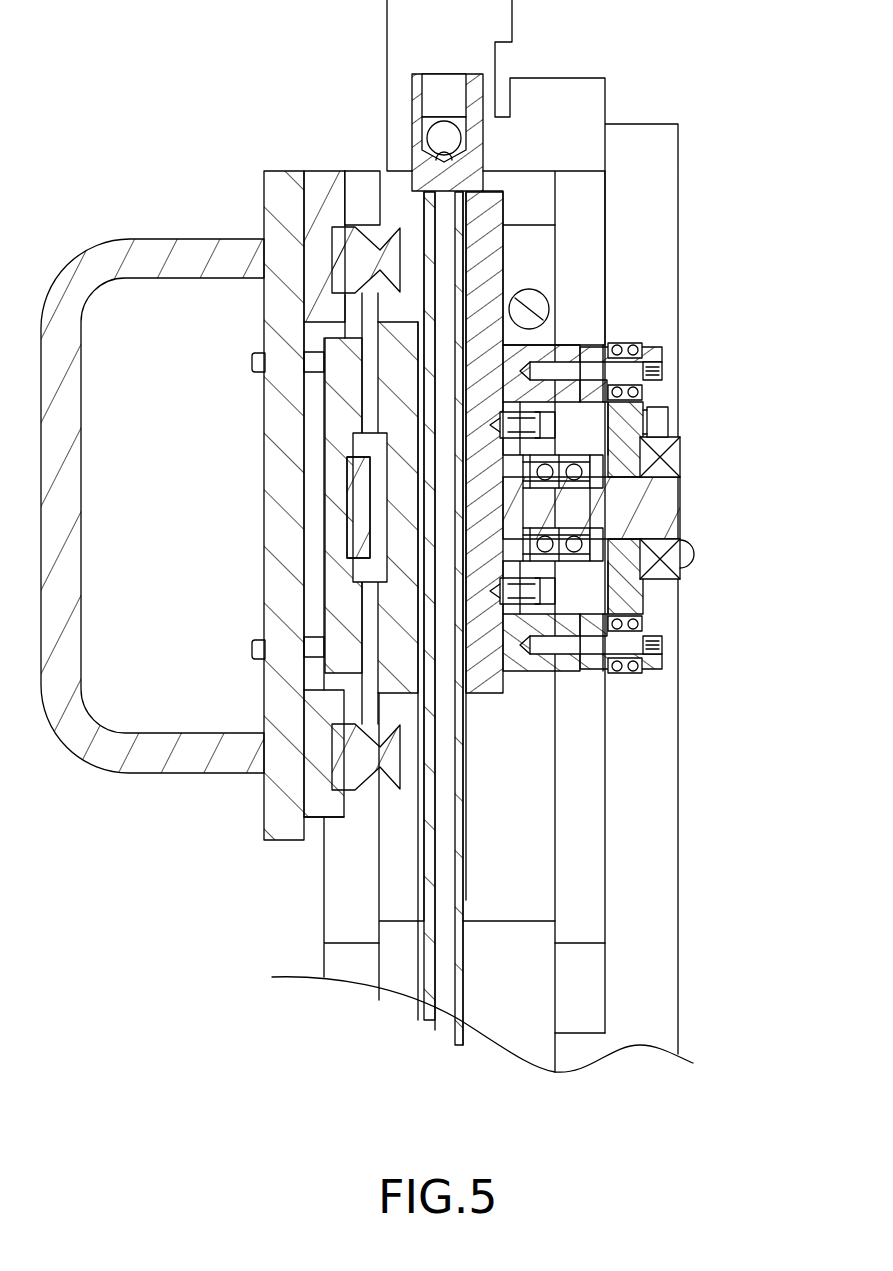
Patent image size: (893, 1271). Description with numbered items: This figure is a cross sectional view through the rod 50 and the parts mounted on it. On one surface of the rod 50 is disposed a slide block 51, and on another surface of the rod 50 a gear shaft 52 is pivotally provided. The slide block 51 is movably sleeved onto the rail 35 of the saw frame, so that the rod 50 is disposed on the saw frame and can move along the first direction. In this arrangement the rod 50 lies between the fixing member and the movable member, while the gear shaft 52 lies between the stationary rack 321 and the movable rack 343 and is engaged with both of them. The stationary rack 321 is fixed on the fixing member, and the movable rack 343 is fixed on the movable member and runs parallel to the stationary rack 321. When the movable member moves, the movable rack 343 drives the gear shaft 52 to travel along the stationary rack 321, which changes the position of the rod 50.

The rod 50 is at (323, 922).
The slide block 51 is at (363, 447).
The gear shaft 52 is at (665, 512).
The rail 35 is at (355, 490).
The stationary rack 321 is at (667, 437).
The movable rack 343 is at (668, 562).